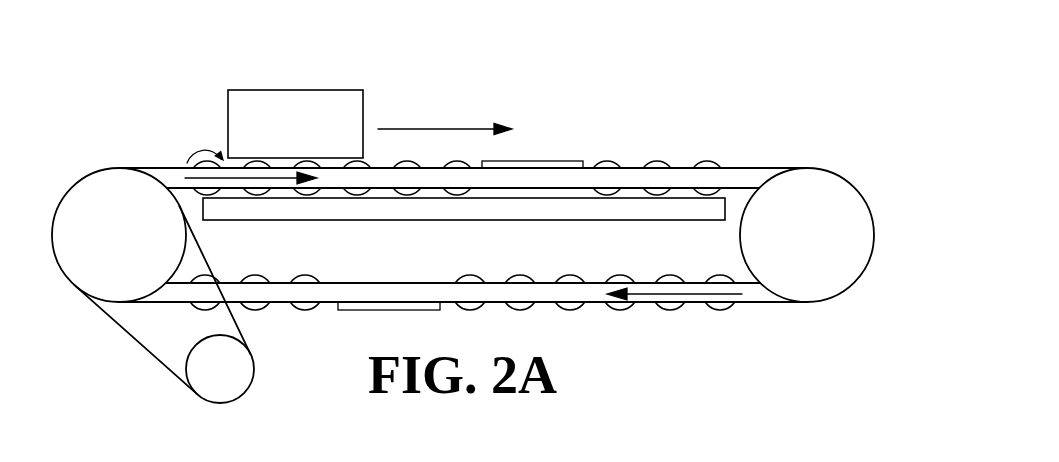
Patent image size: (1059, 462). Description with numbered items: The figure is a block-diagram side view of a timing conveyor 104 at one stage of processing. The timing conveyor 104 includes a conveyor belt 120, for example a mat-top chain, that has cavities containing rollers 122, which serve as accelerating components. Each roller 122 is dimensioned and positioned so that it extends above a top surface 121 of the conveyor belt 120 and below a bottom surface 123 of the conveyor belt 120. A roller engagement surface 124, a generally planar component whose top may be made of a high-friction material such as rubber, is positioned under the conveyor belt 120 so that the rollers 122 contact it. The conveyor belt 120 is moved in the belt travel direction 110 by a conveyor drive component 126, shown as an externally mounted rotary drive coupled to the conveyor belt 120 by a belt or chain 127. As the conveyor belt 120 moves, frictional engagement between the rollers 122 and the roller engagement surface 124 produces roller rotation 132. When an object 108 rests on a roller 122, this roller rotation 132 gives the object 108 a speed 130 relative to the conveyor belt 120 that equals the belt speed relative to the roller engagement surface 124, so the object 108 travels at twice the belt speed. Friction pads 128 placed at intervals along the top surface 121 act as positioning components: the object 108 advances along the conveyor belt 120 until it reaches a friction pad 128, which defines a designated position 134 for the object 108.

The timing conveyor 104 is at (690, 47).
The object 108 is at (277, 90).
The belt travel direction 110 is at (238, 182).
The conveyor belt 120 is at (758, 171).
The top surface 121 is at (737, 165).
The rollers 122 is at (602, 155).
The bottom surface 123 is at (740, 190).
The roller engagement surface 124 is at (394, 211).
The conveyor drive component 126 is at (227, 380).
The belt or chain 127 is at (142, 350).
The friction pad 128 is at (567, 157).
The speed 130 is at (447, 123).
The roller rotation 132 is at (197, 148).
The designated position 134 is at (755, 461).